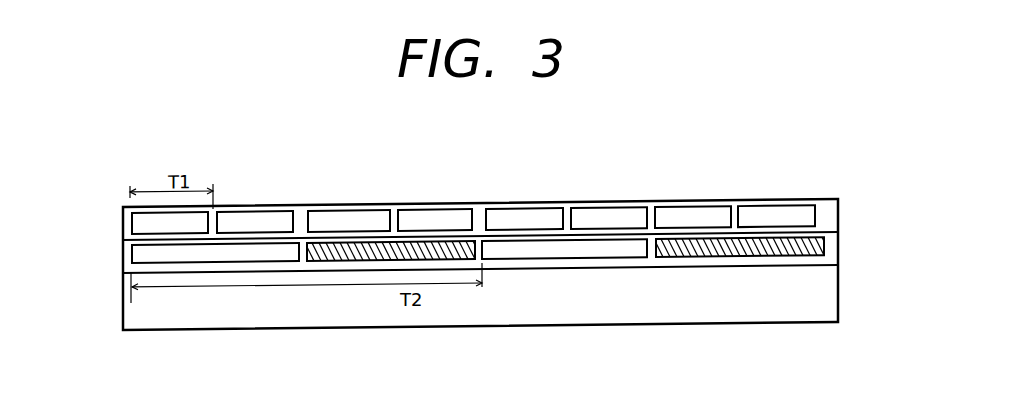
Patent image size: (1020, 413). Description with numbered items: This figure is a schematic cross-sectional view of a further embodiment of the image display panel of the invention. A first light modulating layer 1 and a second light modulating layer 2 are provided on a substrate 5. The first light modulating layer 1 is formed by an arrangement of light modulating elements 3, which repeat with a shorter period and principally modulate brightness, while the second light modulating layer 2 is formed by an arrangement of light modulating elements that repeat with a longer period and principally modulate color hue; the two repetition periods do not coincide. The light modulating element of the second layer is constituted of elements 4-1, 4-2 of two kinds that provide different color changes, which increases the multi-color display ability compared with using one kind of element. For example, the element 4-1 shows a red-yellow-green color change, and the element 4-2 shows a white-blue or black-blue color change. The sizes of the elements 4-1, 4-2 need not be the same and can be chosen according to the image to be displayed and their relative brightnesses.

The first light modulating layer 1 is at (123, 224).
The second light modulating layer 2 is at (123, 258).
The light modulating element 3 is at (322, 220).
The element 4-1 is at (245, 257).
The element 4-2 is at (365, 258).
The substrate 5 is at (459, 308).